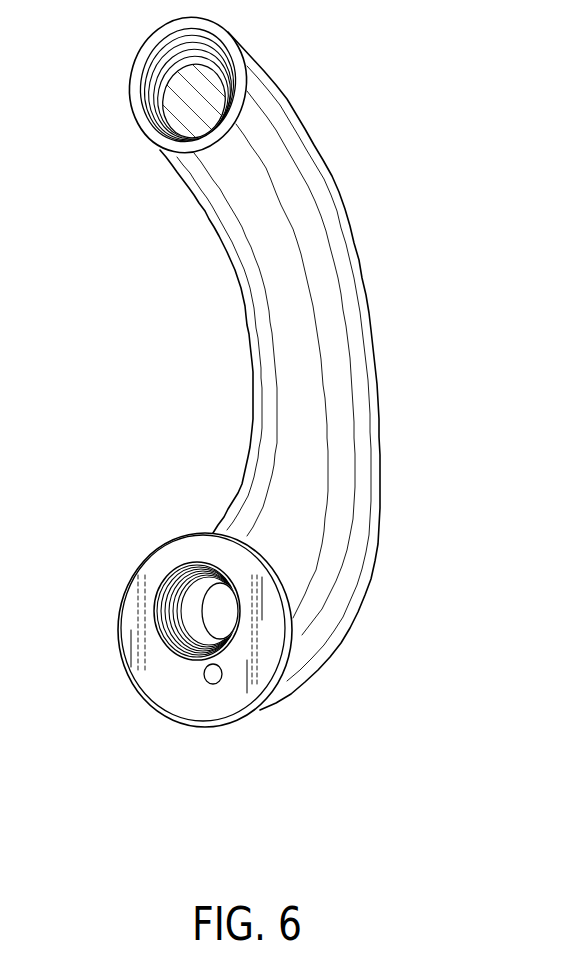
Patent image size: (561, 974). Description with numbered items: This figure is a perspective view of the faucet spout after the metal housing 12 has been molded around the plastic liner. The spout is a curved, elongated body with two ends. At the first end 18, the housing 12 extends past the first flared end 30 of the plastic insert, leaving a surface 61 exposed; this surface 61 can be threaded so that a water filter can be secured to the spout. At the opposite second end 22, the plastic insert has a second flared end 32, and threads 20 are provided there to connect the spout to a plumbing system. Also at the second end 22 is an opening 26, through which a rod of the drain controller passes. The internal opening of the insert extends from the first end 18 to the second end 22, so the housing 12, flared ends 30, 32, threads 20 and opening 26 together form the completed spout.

The metal housing 12 is at (398, 463).
The first end 18 is at (100, 144).
The first flared end 30 is at (197, 53).
The surface 61 is at (145, 80).
The second end 22 is at (270, 768).
The second flared end 32 is at (168, 560).
The threads 20 is at (172, 622).
The opening 26 is at (222, 679).